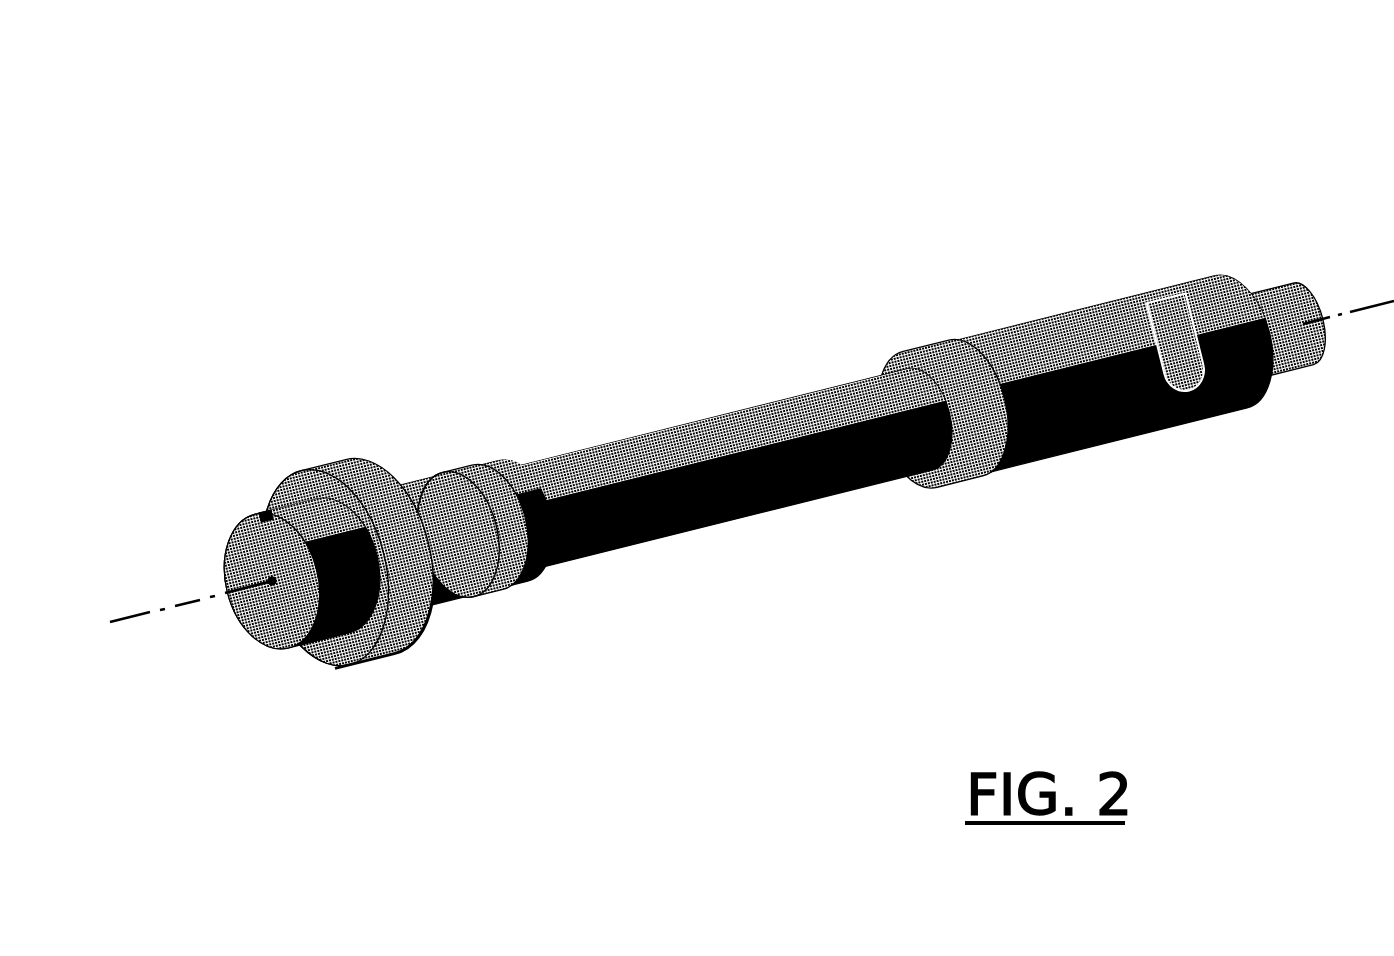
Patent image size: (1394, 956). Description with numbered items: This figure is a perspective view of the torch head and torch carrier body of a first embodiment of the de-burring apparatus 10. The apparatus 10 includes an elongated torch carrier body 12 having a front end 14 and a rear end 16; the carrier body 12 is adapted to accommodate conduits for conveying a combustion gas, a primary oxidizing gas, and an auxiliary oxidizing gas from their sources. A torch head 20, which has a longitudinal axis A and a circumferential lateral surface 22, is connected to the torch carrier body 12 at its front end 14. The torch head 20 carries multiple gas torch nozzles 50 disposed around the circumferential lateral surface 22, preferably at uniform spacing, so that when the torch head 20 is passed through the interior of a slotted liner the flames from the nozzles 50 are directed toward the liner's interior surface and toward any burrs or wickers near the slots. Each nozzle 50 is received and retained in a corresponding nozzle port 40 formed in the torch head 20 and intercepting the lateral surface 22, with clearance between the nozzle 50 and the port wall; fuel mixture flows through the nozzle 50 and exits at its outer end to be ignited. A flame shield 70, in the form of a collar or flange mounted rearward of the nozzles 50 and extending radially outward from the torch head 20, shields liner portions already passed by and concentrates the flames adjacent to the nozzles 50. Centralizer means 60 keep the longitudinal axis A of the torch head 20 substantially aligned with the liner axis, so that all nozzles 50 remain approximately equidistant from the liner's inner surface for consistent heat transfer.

The de-burring apparatus 10 is at (745, 423).
The torch carrier body 12 is at (685, 430).
The front end 14 is at (384, 534).
The rear end 16 is at (1228, 198).
The torch head 20 is at (247, 637).
The circumferential lateral surface 22 is at (273, 510).
The nozzle port 40 is at (333, 647).
The torch nozzle 50 is at (292, 503).
The centralizer means 60 is at (443, 460).
The flame shield 70 is at (350, 460).
The longitudinal axis A is at (727, 486).